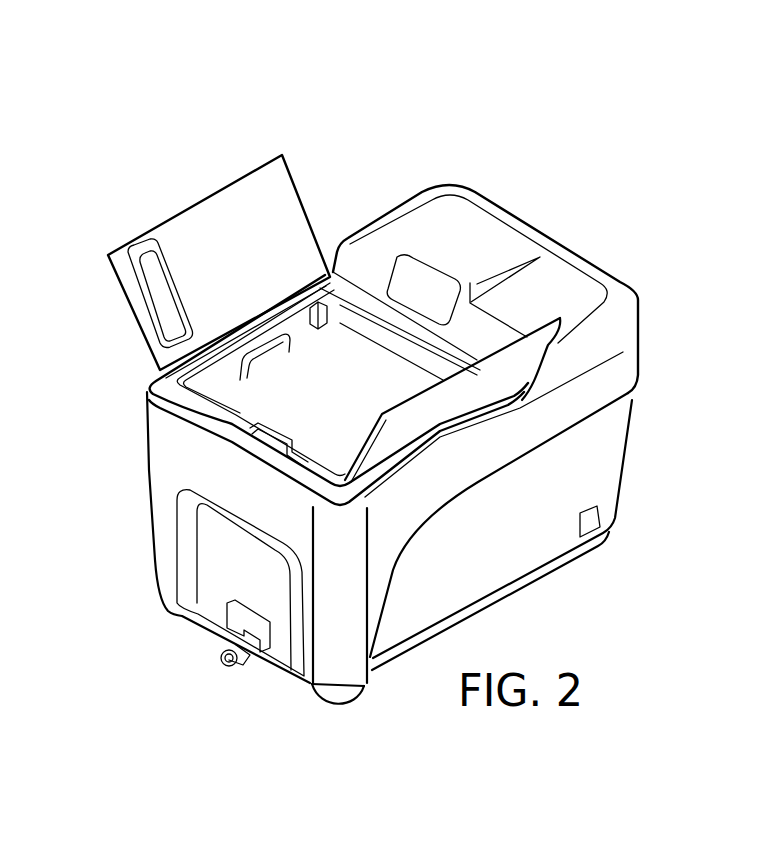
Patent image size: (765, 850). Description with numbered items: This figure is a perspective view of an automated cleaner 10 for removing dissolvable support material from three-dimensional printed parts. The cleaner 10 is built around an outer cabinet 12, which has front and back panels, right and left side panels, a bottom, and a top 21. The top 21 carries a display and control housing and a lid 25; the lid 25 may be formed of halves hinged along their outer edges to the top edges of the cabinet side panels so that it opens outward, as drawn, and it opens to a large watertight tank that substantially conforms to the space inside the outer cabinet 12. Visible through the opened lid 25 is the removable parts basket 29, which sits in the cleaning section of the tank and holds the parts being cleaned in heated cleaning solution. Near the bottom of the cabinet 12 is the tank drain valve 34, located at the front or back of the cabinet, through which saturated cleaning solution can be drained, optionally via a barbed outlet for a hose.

The automated cleaner 10 is at (412, 175).
The outer cabinet 12 is at (513, 567).
The top 21 is at (523, 248).
The lid 25 is at (173, 218).
The removable parts basket 29 is at (267, 412).
The tank drain valve 34 is at (233, 645).